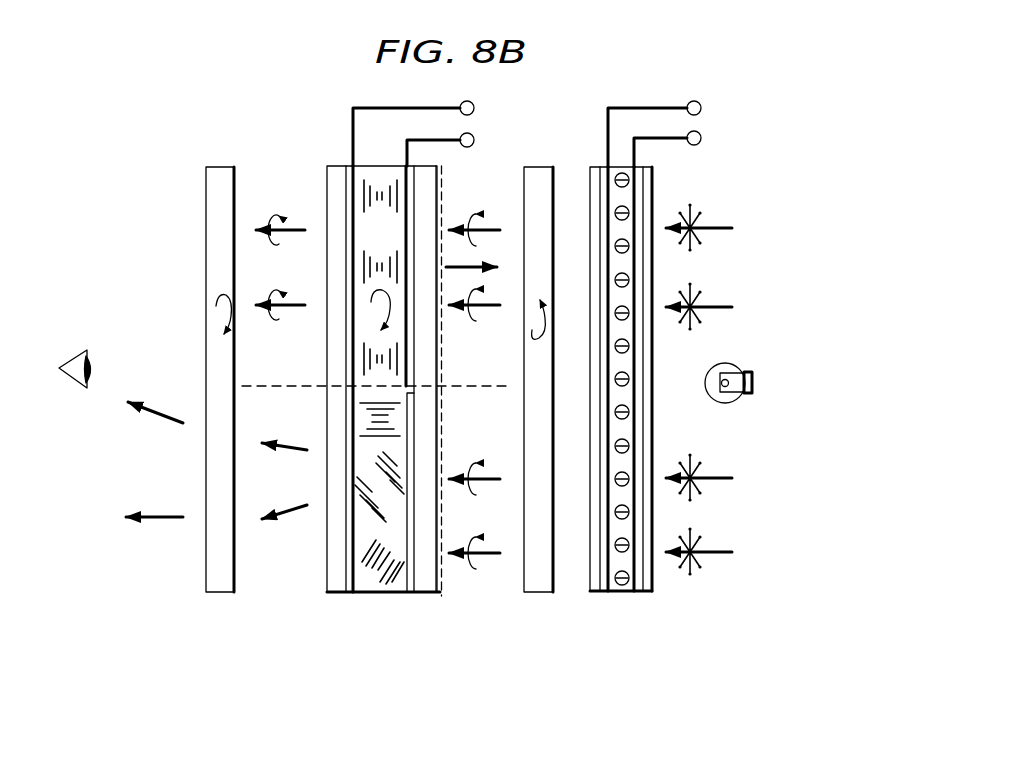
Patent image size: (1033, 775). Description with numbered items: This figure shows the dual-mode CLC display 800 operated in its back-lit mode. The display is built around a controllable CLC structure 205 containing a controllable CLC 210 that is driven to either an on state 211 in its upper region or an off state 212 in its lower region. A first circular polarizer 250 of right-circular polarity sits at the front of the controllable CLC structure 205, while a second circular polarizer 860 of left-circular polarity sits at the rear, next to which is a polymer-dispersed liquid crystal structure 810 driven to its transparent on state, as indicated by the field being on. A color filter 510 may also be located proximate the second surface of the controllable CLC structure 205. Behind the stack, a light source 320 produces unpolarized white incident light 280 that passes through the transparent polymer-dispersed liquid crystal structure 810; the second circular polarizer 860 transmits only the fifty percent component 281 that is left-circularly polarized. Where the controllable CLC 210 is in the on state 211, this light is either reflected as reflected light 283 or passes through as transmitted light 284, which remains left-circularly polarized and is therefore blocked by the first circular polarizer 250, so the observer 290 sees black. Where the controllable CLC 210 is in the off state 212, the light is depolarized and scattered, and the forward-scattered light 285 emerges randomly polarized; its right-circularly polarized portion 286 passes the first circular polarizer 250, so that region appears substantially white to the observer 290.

The dual-mode CLC display 800 is at (302, 76).
The first circular polarizer 250 is at (221, 166).
The controllable CLC 210 is at (373, 164).
The on state 211 is at (396, 241).
The off state 212 is at (390, 529).
The controllable CLC structure 205 is at (400, 368).
The color filter 510 is at (442, 596).
The left-circularly polarized component 281 is at (481, 227).
The reflected light 283 is at (478, 266).
The transmitted light 284 is at (302, 232).
The forward-scattered light 285 is at (287, 448).
The right-circularly polarized portion 286 is at (165, 423).
The observer 290 is at (69, 361).
The second circular polarizer 860 is at (536, 166).
The polymer-dispersed liquid crystal structure 810 is at (652, 600).
The incident light 280 is at (718, 231).
The light source 320 is at (740, 364).